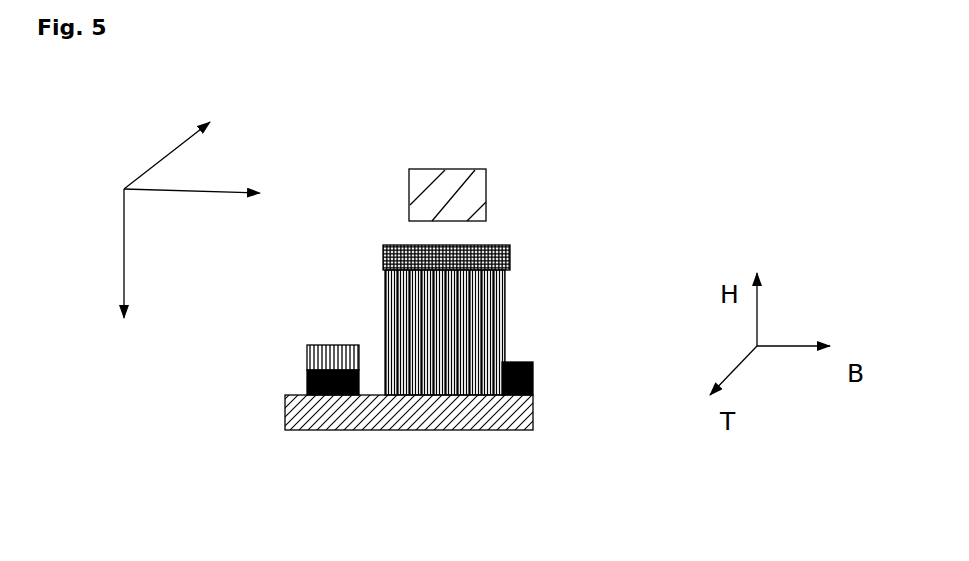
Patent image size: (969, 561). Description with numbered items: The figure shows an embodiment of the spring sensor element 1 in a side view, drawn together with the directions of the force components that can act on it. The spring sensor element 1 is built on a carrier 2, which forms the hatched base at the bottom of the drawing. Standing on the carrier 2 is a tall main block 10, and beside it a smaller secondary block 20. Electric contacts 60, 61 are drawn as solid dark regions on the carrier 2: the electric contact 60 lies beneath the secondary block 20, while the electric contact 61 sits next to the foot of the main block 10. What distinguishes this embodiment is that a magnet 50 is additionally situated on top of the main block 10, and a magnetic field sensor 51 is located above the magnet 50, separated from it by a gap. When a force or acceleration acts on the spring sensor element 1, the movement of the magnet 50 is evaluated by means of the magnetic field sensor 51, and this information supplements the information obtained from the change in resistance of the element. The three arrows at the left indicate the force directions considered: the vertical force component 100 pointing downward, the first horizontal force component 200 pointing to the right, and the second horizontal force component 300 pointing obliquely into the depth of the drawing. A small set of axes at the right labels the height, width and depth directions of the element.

The spring sensor element 1 is at (342, 152).
The carrier 2 is at (442, 417).
The main block 10 is at (498, 283).
The secondary block 20 is at (343, 350).
The magnet 50 is at (509, 253).
The magnetic field sensor 51 is at (470, 183).
The electric contact 60 is at (312, 388).
The electric contact 61 is at (533, 378).
The vertical force component 100 is at (86, 253).
The first horizontal force component 200 is at (195, 222).
The second horizontal force component 300 is at (142, 155).